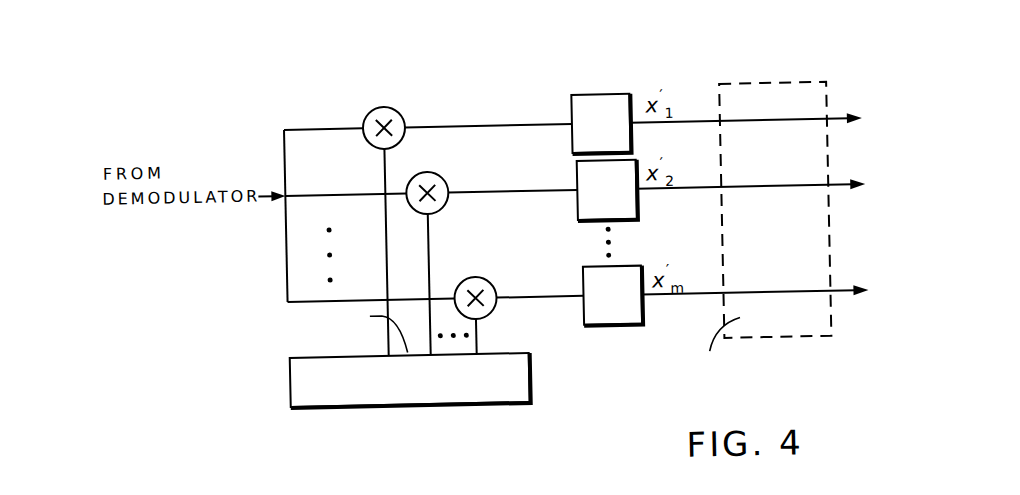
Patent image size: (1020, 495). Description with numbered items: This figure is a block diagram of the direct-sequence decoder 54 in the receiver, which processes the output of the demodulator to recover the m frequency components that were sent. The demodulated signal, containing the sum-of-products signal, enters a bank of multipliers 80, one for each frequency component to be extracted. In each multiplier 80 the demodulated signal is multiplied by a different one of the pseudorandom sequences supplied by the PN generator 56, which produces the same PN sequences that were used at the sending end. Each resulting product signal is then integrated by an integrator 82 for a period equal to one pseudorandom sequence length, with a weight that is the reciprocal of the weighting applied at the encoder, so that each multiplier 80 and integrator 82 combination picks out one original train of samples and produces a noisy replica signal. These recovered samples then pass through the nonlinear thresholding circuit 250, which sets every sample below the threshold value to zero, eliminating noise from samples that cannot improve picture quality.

The direct-sequence decoder 54 is at (280, 331).
The PN generator 56 is at (524, 381).
The multiplier 80 is at (391, 109).
The integrator 82 is at (596, 101).
The nonlinear thresholding circuit 250 is at (826, 323).